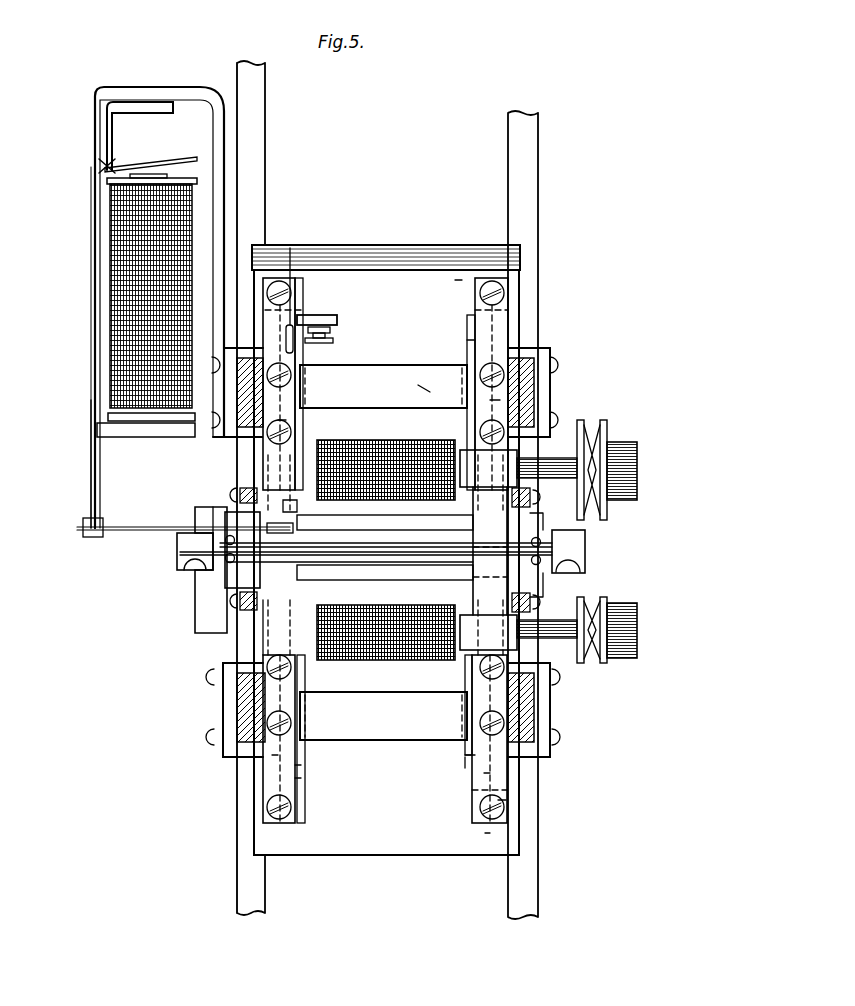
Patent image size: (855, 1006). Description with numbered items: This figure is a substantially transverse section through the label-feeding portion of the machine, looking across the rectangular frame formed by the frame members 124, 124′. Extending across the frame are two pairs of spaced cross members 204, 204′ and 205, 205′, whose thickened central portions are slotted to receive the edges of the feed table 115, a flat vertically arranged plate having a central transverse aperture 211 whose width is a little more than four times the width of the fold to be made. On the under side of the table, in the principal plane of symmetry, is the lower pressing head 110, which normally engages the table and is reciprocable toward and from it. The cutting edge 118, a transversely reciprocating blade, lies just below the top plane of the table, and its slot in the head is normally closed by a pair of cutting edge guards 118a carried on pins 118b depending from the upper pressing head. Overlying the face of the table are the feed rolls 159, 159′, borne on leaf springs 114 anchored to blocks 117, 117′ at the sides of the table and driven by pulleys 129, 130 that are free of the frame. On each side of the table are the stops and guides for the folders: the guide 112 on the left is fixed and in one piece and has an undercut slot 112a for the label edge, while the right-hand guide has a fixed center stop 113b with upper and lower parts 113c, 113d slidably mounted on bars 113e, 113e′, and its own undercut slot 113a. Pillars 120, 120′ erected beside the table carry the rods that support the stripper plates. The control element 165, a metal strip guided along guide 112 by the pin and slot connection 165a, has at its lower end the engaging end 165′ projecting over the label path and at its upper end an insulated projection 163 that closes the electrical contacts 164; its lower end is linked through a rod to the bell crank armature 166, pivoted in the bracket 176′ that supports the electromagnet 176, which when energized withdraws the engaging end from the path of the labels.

The frame member 124 is at (530, 157).
The frame member 124′ is at (254, 137).
The electromagnet 176 is at (138, 222).
The bracket 176′ is at (100, 133).
The bell crank armature 166 is at (96, 387).
The cross member 204′ is at (240, 372).
The cross member 204 is at (527, 363).
The cross member 205′ is at (240, 697).
The cross member 205 is at (525, 712).
The bar 113e is at (455, 375).
The bar 113e′ is at (388, 725).
The upper guide part 113c is at (423, 388).
The undercut slot 113a is at (460, 768).
The lower guide part 113d is at (470, 755).
The fixed stop 113b is at (462, 572).
The feed table 115 is at (458, 282).
The block 117 is at (470, 343).
The block 117′ is at (502, 802).
The leaf spring 114 is at (495, 403).
The guide and stop 112 is at (282, 423).
The undercut slot 112a is at (298, 767).
The feed roll 159 is at (375, 452).
The feed roll 159′ is at (395, 655).
The drive pulley 129 is at (585, 425).
The drive pulley 130 is at (598, 625).
The pillar 120 is at (535, 495).
The pillar 120′ is at (540, 595).
The lower pressing head 110 is at (240, 520).
The engaging end 165′ is at (305, 547).
The control element 165 is at (287, 505).
The pin and slot connection 165a is at (293, 270).
The electrically insulated projection 163 is at (318, 318).
The electrical contacts 164 is at (335, 338).
The pin 118b is at (193, 565).
The cutting edge guard 118a is at (225, 548).
The cutting edge 118 is at (248, 567).
The transverse aperture 211 is at (278, 612).